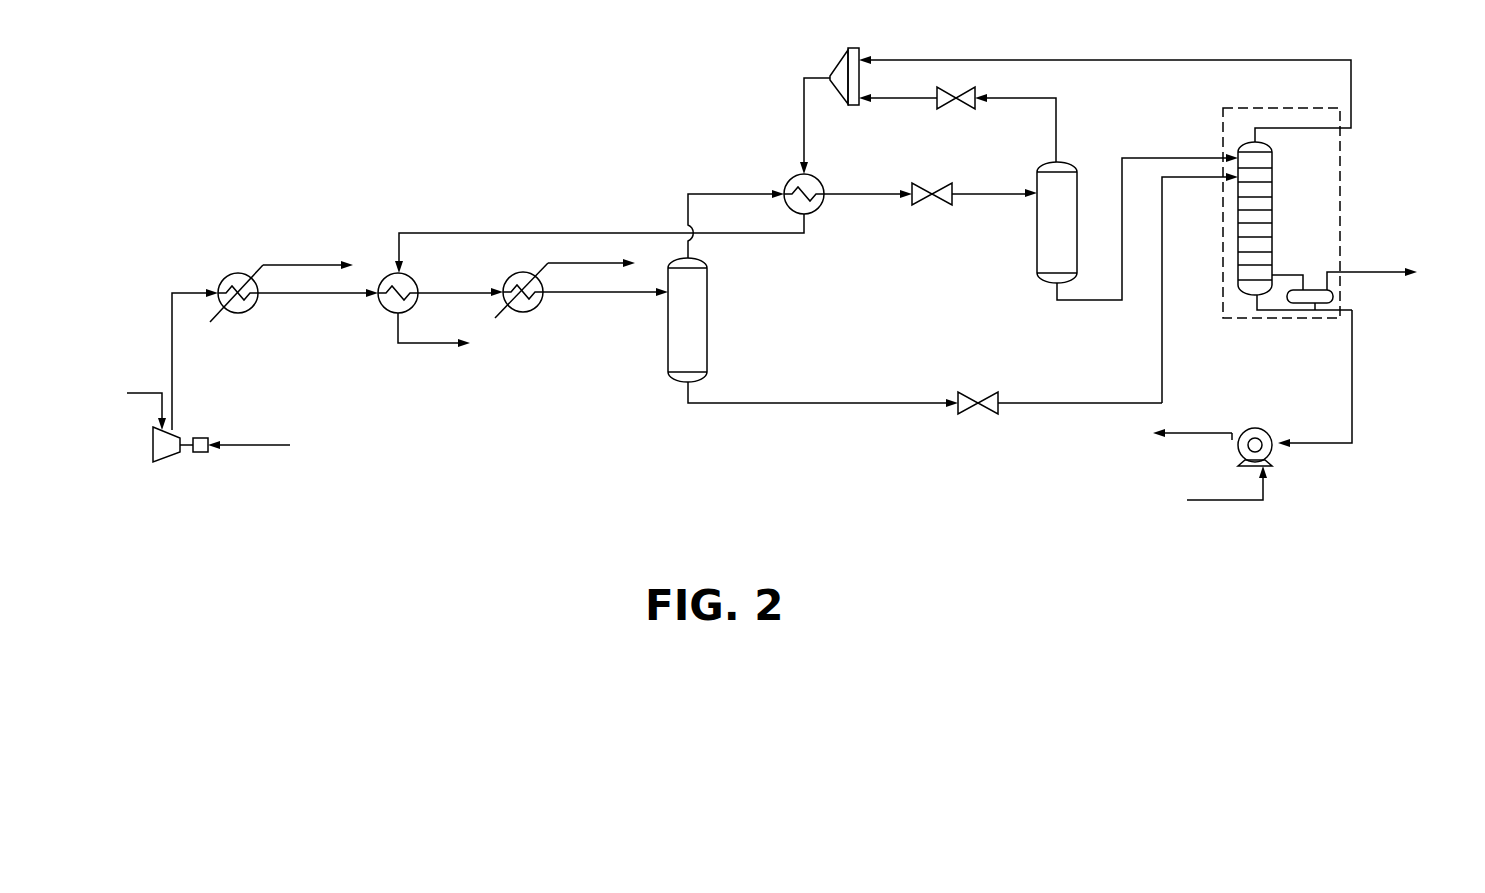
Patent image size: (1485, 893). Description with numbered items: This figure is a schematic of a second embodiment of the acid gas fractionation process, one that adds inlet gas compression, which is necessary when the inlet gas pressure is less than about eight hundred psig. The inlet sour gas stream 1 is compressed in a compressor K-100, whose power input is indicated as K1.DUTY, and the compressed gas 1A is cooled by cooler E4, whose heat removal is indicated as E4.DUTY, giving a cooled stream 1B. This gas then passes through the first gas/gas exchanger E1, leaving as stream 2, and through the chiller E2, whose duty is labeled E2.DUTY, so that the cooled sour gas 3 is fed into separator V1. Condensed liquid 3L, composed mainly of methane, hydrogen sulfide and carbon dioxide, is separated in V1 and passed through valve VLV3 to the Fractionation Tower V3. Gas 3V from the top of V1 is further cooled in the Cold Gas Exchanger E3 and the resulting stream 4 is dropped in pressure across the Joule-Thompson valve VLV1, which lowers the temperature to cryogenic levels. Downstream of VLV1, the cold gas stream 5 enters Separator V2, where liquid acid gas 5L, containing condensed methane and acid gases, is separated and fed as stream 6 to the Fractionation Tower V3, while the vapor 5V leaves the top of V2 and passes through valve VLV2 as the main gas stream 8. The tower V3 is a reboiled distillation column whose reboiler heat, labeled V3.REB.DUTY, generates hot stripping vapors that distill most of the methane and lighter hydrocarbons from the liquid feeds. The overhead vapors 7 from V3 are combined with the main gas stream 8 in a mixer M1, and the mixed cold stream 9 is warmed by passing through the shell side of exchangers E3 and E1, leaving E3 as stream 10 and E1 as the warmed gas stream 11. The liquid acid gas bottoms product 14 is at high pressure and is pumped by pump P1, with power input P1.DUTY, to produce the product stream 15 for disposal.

The inlet sour gas stream 1 is at (153, 390).
The compressed gas 1A is at (173, 388).
The cooled compressed feed stream 1B is at (343, 294).
The feed stream after heat exchanger E1 2 is at (470, 293).
The cooled sour gas 3 is at (626, 295).
The gas from top of V1 3V is at (754, 196).
The condensed liquid 3L is at (845, 405).
The cooled vapor stream from E3 4 is at (882, 196).
The cold gas stream 5 is at (1009, 196).
The vapor stream from separator V2 5V is at (1004, 104).
The liquid acid gas 5L is at (1122, 253).
The expanded liquid stream to column V3 6 is at (1162, 336).
The overhead vapors 7 is at (1136, 62).
The main gas stream 8 is at (913, 100).
The mixed cold stream 9 is at (804, 150).
The warmed recycle stream from E3 10 is at (760, 236).
The warmed gas stream 11 is at (413, 345).
The liquid acid gas bottoms product 14 is at (1352, 407).
The pumped liquid product stream 15 is at (1207, 434).
The compressor K-100 is at (148, 462).
The compressor power input K1.DUTY is at (264, 457).
The cooler E4 is at (228, 277).
The heat duty of exchanger E4 E4.DUTY is at (309, 276).
The gas/gas exchanger E1 is at (412, 279).
The chiller E2 is at (514, 277).
The heat duty of exchanger E2 E2.DUTY is at (591, 274).
The cold gas exchanger E3 is at (790, 178).
The separator V1 is at (707, 356).
The separator V2 is at (1040, 276).
The fractionation tower V3 is at (1241, 300).
The reboiler heat duty of column V3 V3.REB.DUTY is at (1402, 286).
The Joule-Thompson valve VLV1 is at (934, 215).
The second expansion valve VLV2 is at (982, 130).
The third expansion valve VLV3 is at (988, 414).
The mixer M1 is at (842, 62).
The pump P1 is at (1256, 431).
The pump power input P1.DUTY is at (1223, 501).